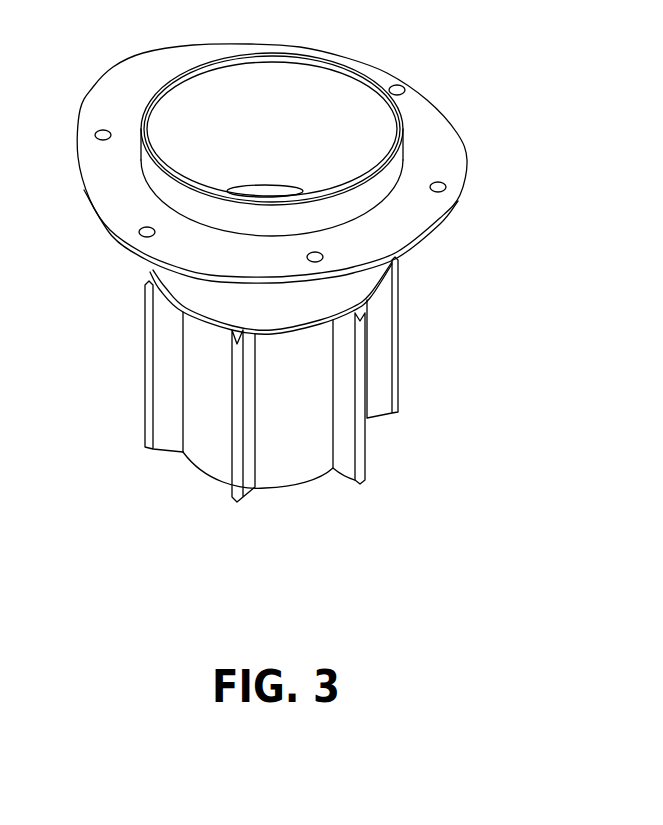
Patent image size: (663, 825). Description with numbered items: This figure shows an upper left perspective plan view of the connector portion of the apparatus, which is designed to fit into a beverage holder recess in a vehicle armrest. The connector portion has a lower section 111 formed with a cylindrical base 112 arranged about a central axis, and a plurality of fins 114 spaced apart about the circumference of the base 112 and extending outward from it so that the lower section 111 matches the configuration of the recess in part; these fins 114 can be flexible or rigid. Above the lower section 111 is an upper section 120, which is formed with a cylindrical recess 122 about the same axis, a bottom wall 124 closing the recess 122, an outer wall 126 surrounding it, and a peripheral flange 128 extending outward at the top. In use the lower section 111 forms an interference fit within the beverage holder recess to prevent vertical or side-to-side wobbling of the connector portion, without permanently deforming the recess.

The lower section 111 is at (297, 485).
The cylindrical base 112 is at (212, 433).
The fins 114 is at (167, 383).
The upper section 120 is at (138, 108).
The cylindrical recess 122 is at (300, 100).
The bottom wall 124 is at (260, 187).
The outer wall 126 is at (197, 282).
The peripheral flange 128 is at (423, 150).